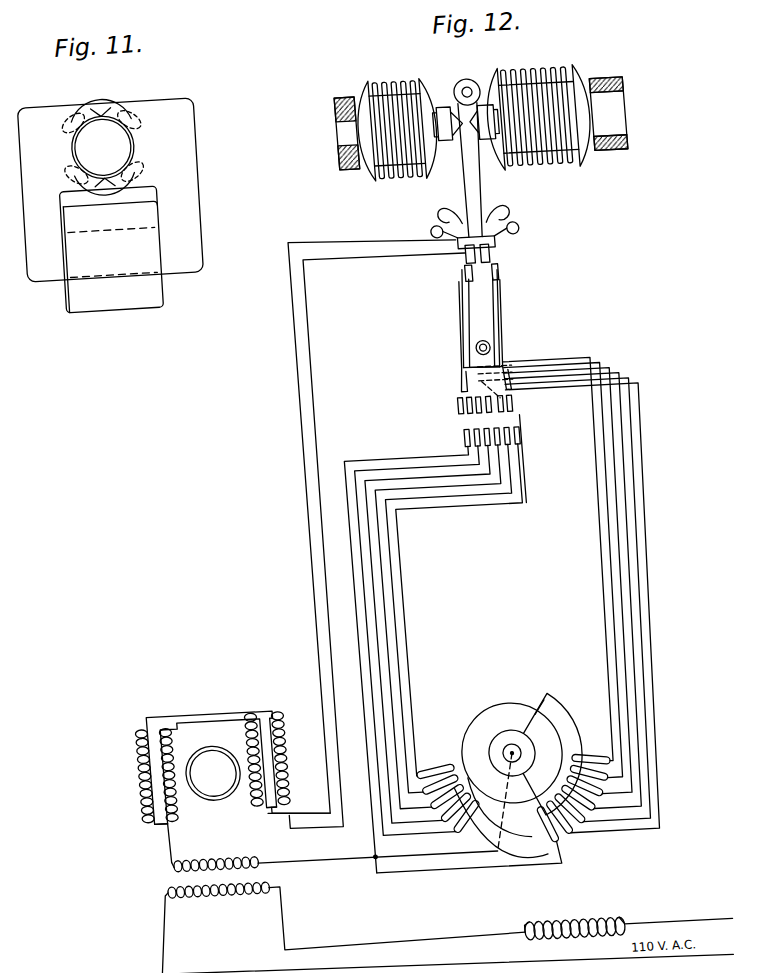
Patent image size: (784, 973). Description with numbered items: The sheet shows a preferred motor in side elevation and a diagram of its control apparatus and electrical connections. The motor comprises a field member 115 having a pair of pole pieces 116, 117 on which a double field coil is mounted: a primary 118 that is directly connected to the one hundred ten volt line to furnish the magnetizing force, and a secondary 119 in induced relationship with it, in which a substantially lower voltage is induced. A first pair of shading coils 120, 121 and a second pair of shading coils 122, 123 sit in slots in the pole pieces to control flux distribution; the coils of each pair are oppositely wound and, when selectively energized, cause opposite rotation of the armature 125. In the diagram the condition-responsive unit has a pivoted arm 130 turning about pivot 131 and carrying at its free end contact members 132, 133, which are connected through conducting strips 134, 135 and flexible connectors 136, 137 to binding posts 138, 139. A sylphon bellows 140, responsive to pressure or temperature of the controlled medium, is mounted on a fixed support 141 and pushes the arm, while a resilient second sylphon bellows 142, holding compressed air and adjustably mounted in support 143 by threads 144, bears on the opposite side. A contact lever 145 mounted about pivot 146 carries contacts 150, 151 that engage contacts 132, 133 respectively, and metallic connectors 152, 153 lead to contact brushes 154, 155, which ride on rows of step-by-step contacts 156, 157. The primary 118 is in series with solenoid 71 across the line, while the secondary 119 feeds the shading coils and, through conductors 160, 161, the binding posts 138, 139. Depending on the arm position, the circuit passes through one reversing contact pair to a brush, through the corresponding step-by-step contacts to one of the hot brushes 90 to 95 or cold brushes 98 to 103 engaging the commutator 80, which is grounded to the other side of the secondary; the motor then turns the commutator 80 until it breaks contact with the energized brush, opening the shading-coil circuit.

In FIG. 11, the field member 115 is at (198, 240).
In FIG. 11, the pole piece 116 is at (88, 128).
In FIG. 11, the pole piece 117 is at (121, 163).
In FIG. 11, the secondary 119 is at (157, 286).
In FIG. 12, the secondary 119 is at (190, 845).
In FIG. 11, the shading coil 120 is at (148, 110).
In FIG. 12, the shading coil 120 is at (118, 767).
In FIG. 11, the shading coil 121 is at (150, 117).
In FIG. 12, the shading coil 121 is at (158, 800).
In FIG. 11, the shading coil 122 is at (150, 167).
In FIG. 12, the shading coil 122 is at (238, 782).
In FIG. 11, the shading coil 123 is at (152, 173).
In FIG. 12, the shading coil 123 is at (263, 772).
In FIG. 11, the armature 125 is at (103, 148).
In FIG. 12, the armature 125 is at (213, 773).
In FIG. 12, the pivoted arm 130 is at (505, 187).
In FIG. 12, the pivot 131 is at (504, 86).
In FIG. 12, the contact member 132 is at (482, 273).
In FIG. 12, the contact member 133 is at (516, 272).
In FIG. 12, the conducting strip 134 is at (484, 259).
In FIG. 12, the conducting strip 135 is at (509, 257).
In FIG. 12, the flexible connector 136 is at (474, 207).
In FIG. 12, the flexible connector 137 is at (524, 212).
In FIG. 12, the binding post 138 is at (452, 227).
In FIG. 12, the binding post 139 is at (540, 231).
In FIG. 12, the sylphon bellows 140 is at (430, 80).
In FIG. 12, the fixed support 141 is at (376, 92).
In FIG. 12, the second sylphon bellows 142 is at (575, 78).
In FIG. 12, the support 143 is at (656, 96).
In FIG. 12, the threads 144 is at (630, 88).
In FIG. 12, the contact lever 145 is at (505, 331).
In FIG. 12, the pivot 146 is at (502, 352).
In FIG. 12, the contact 150 is at (478, 285).
In FIG. 12, the contact 151 is at (514, 285).
In FIG. 12, the metallic connector 152 is at (476, 337).
In FIG. 12, the metallic connector 153 is at (513, 345).
In FIG. 12, the contact brush 154 is at (482, 398).
In FIG. 12, the contact brush 155 is at (520, 428).
In FIG. 12, the step-by-step contacts 156 is at (465, 402).
In FIG. 12, the step-by-step contacts 157 is at (469, 437).
In FIG. 12, the conductor 160 is at (307, 626).
In FIG. 12, the conductor 161 is at (320, 657).
In FIG. 12, the commutator 80 is at (545, 718).
In FIG. 12, the brush 90 is at (414, 768).
In FIG. 12, the brush 103 is at (579, 788).
In FIG. 12, the brush 94 is at (450, 824).
In FIG. 12, the brush 95 is at (527, 835).
In FIG. 12, the brush 98 is at (540, 843).
In FIG. 12, the primary 118 is at (196, 881).
In FIG. 12, the solenoid 71 is at (537, 931).